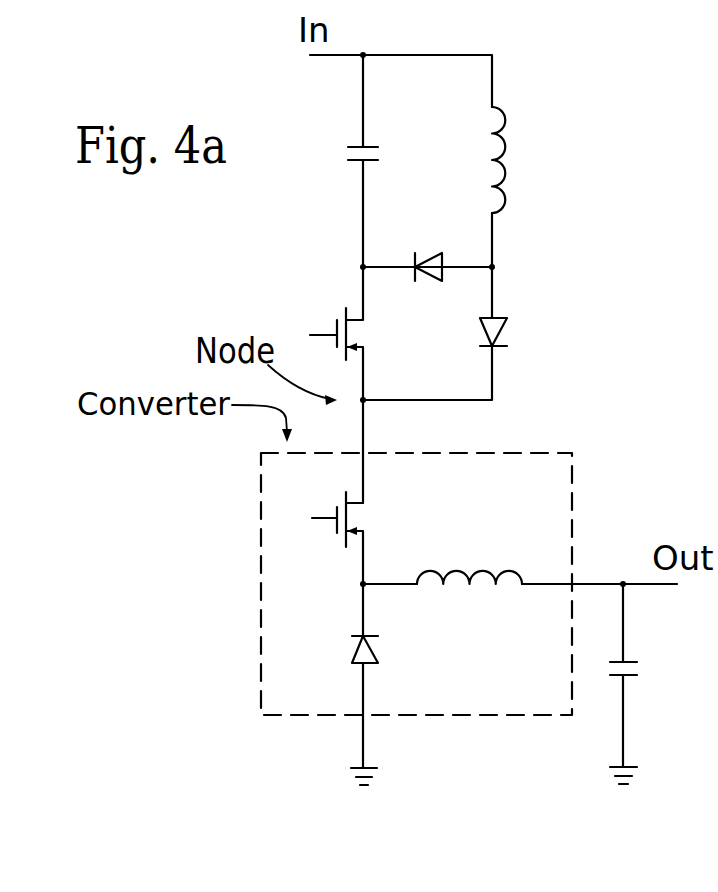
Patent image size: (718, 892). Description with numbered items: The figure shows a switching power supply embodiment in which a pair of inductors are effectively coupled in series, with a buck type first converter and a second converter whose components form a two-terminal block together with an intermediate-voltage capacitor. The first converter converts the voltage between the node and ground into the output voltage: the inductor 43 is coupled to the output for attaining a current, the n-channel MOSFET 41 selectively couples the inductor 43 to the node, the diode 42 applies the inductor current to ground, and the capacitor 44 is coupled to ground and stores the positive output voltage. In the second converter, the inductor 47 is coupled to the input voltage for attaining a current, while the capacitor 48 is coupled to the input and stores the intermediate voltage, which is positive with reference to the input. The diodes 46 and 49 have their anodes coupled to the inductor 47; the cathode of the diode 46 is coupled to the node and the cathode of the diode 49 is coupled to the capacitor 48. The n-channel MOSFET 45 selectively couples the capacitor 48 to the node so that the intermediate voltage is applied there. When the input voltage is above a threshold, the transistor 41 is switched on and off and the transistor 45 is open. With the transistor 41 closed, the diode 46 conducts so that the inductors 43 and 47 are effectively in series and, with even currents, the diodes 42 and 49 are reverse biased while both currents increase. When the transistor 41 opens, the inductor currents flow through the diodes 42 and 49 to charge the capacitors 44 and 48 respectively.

The n-channel MOSFET 41 is at (347, 541).
The diode 42 is at (357, 666).
The inductor 43 is at (508, 570).
The capacitor 44 is at (628, 676).
The n-channel MOSFET 45 is at (345, 312).
The diode 46 is at (497, 348).
The inductor 47 is at (506, 200).
The capacitor 48 is at (369, 161).
The diode 49 is at (432, 282).